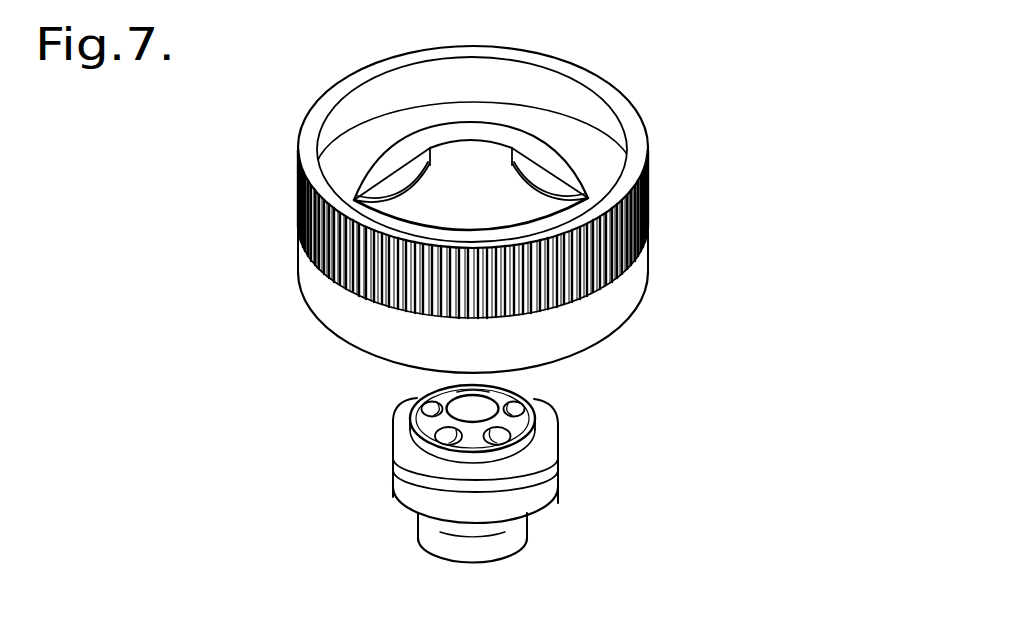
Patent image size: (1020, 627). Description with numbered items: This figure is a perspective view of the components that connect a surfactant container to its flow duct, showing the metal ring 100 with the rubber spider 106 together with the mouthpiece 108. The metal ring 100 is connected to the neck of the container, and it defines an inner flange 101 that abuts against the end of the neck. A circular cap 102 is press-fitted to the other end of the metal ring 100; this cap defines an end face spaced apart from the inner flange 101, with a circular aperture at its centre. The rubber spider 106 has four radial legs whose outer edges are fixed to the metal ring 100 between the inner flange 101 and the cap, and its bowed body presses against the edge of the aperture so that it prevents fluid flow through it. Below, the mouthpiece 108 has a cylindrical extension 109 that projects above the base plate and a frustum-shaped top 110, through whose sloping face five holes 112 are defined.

The metal ring 100 is at (628, 160).
The inner flange 101 is at (558, 137).
The circular cap 102 is at (597, 318).
The rubber spider 106 is at (453, 220).
The mouthpiece 108 is at (407, 490).
The cylindrical extension 109 is at (521, 458).
The frustum-shaped top 110 is at (537, 412).
The holes 112 is at (437, 432).